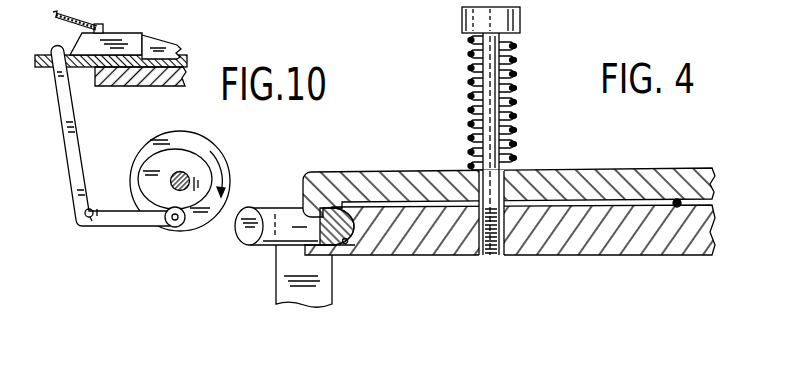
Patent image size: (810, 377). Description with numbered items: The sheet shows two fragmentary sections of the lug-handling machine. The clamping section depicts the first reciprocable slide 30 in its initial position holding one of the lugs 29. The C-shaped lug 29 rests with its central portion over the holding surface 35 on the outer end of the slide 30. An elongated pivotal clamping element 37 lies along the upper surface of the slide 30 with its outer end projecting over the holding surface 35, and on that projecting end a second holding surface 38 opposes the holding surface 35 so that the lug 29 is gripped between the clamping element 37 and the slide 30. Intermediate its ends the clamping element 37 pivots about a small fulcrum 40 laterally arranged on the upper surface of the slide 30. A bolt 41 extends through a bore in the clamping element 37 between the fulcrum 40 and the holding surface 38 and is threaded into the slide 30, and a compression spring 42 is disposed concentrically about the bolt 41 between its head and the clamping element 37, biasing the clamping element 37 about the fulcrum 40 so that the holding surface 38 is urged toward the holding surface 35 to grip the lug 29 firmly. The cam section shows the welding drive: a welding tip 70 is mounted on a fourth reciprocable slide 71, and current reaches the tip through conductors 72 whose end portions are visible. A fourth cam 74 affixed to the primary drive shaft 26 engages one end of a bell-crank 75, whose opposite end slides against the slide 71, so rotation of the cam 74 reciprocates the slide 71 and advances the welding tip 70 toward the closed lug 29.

In FIG. 10, the primary drive shaft 26 is at (174, 172).
In FIG. 4, the lug 29 is at (247, 240).
In FIG. 4, the first reciprocable slide 30 is at (570, 244).
In FIG. 4, the holding surface 35 is at (346, 244).
In FIG. 4, the clamping element 37 is at (605, 176).
In FIG. 4, the second holding surface 38 is at (333, 206).
In FIG. 4, the fulcrum 40 is at (678, 199).
In FIG. 4, the bolt 41 is at (489, 75).
In FIG. 4, the compression spring 42 is at (515, 113).
In FIG. 10, the welding tip 70 is at (177, 45).
In FIG. 10, the fourth reciprocable slide 71 is at (113, 38).
In FIG. 10, the conductors 72 is at (56, 16).
In FIG. 10, the fourth cam 74 is at (190, 160).
In FIG. 10, the bell-crank 75 is at (72, 147).